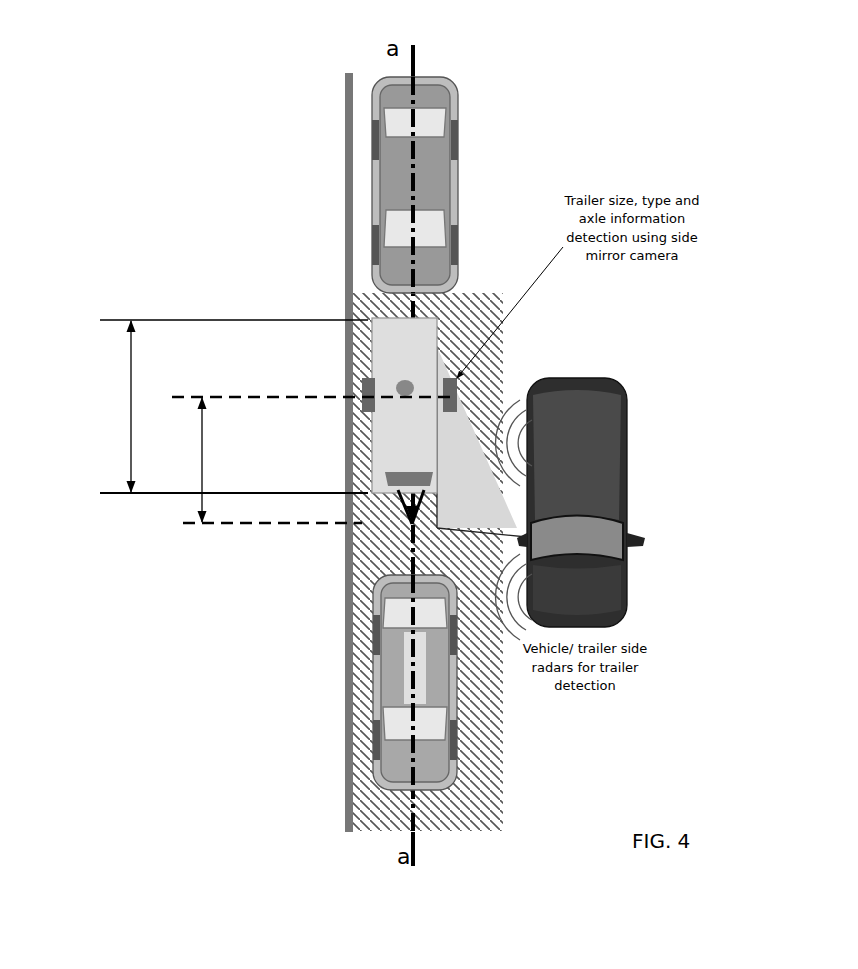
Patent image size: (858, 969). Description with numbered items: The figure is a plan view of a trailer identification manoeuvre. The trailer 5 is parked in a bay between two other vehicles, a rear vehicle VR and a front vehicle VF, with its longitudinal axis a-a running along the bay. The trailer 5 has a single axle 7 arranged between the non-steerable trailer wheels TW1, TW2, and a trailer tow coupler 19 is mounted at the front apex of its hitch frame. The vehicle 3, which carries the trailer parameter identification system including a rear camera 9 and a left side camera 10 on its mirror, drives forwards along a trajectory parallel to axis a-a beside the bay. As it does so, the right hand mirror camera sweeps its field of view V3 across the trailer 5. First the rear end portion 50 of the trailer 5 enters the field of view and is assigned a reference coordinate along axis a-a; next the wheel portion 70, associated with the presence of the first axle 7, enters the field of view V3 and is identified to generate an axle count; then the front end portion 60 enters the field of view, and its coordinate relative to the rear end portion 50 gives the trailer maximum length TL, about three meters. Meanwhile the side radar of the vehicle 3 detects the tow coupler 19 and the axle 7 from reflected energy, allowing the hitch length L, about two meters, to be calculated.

The vehicle 3 is at (665, 565).
The trailer 5 is at (404, 405).
The axle 7 is at (407, 352).
The rear camera 9 is at (637, 542).
The left side camera 10 is at (529, 545).
The trailer tow coupler 19 is at (395, 525).
The rear end portion 50 is at (445, 318).
The front end portion 60 is at (447, 503).
The wheel portion 70 is at (467, 348).
The trailer wheel TW1 is at (457, 398).
The trailer wheel TW2 is at (365, 377).
The rear parked vehicle VR is at (393, 190).
The front parked vehicle VF is at (413, 658).
The trailer maximum length TL is at (231, 406).
The trailer hitch length L is at (313, 460).
The field of view V3 is at (482, 442).